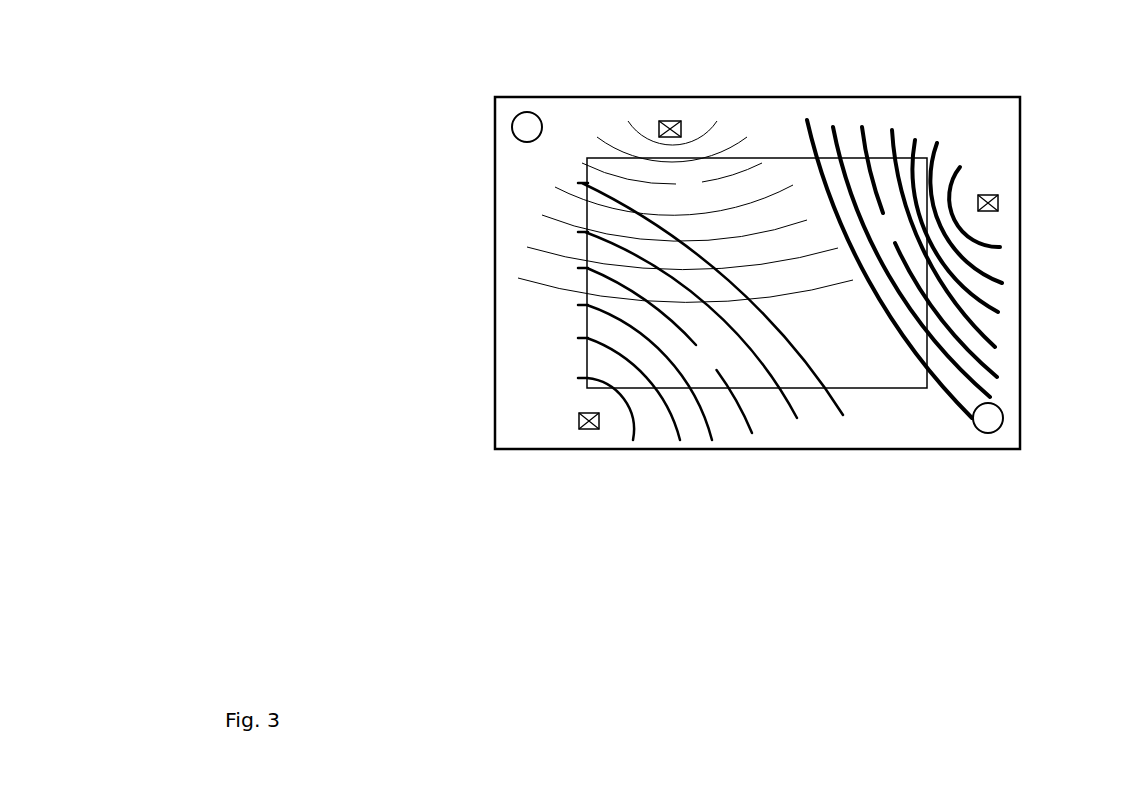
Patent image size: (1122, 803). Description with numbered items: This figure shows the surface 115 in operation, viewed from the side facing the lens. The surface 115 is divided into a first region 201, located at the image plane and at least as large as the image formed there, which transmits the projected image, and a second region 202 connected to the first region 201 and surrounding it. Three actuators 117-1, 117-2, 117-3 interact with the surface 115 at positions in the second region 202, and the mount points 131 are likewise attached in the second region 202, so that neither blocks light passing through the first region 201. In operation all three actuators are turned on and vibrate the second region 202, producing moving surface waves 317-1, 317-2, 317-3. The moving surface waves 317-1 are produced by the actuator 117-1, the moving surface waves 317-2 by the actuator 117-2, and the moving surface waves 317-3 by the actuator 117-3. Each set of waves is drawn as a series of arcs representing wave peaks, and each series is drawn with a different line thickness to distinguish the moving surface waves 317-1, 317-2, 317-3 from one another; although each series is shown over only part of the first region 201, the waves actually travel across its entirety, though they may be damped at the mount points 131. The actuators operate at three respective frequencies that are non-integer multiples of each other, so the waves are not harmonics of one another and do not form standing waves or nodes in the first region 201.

The surface 115 is at (495, 440).
The actuator 117-1 is at (675, 120).
The actuator 117-2 is at (1000, 200).
The actuator 117-3 is at (585, 430).
The mount points 131 is at (512, 128).
The first region 201 is at (773, 286).
The second region 202 is at (800, 430).
The moving surface waves 317-1 is at (750, 137).
The moving surface waves 317-2 is at (917, 135).
The moving surface waves 317-3 is at (680, 443).